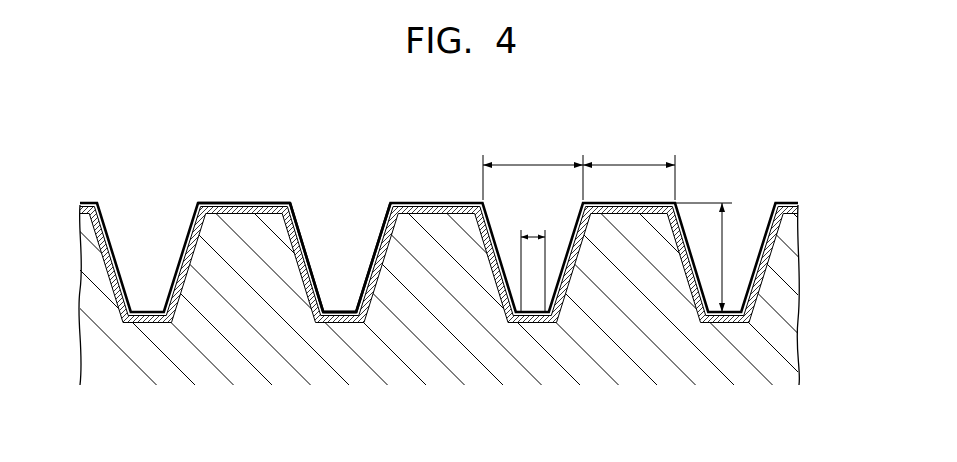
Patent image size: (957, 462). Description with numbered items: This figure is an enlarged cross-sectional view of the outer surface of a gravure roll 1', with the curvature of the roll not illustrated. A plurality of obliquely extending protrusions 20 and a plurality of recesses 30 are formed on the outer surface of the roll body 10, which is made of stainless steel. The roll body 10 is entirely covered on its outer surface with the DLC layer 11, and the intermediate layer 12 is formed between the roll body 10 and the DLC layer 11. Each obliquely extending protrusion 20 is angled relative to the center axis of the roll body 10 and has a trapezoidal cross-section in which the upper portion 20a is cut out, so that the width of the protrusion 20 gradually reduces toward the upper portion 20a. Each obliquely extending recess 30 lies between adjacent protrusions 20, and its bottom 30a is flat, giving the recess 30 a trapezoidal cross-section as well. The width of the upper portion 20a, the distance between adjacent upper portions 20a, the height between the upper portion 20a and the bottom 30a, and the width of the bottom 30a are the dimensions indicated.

The gravure roll 1' is at (478, 246).
The roll body 10 is at (784, 303).
The DLC layer 11 is at (174, 278).
The intermediate layer 12 is at (195, 240).
The obliquely extending protrusion 20 is at (439, 212).
The upper portion 20a is at (242, 202).
The obliquely extending recess 30 is at (350, 237).
The bottom 30a is at (342, 311).